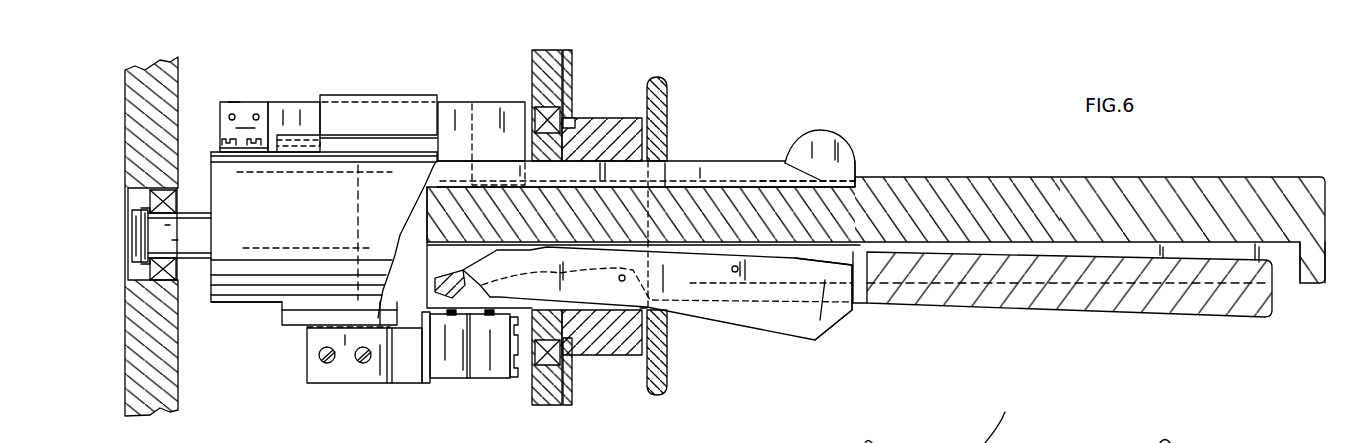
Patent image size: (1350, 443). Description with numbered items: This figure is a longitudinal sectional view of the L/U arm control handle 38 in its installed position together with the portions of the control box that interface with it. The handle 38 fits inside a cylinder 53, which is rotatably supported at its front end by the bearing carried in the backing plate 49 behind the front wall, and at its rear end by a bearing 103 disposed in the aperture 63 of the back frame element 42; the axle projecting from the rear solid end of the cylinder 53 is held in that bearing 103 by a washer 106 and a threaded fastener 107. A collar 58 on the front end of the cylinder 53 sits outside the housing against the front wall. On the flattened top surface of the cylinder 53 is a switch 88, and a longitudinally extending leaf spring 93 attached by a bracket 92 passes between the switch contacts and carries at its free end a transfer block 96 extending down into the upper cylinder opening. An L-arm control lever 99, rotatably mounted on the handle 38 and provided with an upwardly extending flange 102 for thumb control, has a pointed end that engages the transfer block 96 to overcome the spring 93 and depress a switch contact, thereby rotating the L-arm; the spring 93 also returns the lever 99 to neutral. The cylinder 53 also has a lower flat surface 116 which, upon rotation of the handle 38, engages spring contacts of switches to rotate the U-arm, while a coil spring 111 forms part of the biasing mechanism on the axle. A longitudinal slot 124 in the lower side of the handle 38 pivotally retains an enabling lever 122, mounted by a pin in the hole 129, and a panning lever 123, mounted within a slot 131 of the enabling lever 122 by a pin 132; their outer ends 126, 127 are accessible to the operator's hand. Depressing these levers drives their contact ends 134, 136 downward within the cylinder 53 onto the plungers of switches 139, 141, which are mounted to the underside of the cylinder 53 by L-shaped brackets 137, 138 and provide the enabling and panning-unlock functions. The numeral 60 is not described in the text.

The L/U arm control handle 38 is at (980, 185).
The back frame element 42 is at (130, 347).
The backing plate 49 is at (545, 53).
The cylinder 53 is at (270, 300).
The collar 58 is at (598, 118).
The member 60 is at (1067, 440).
The aperture 63 is at (140, 205).
The switch 88 is at (385, 115).
The bracket 92 is at (240, 108).
The leaf spring 93 is at (295, 112).
The transfer block 96 is at (478, 105).
The L-arm control lever 99 is at (730, 165).
The flange 102 is at (825, 140).
The bearing 103 is at (172, 300).
The washer 106 is at (140, 260).
The threaded fastener 107 is at (138, 216).
The coil spring 111 is at (1007, 413).
The lower flat surface 116 is at (238, 305).
The enabling lever 122 is at (910, 304).
The panning lever 123 is at (712, 312).
The slot 124 is at (1292, 280).
The outer end 126 is at (1162, 302).
The outer end 127 is at (808, 345).
The hole 129 is at (737, 273).
The slot 131 is at (860, 305).
The pin 132 is at (622, 283).
The contact end 134 is at (453, 318).
The contact end 136 is at (515, 370).
The L-shaped bracket 137 is at (346, 367).
The L-shaped bracket 138 is at (425, 363).
The switch 139 is at (443, 372).
The switch 141 is at (487, 372).